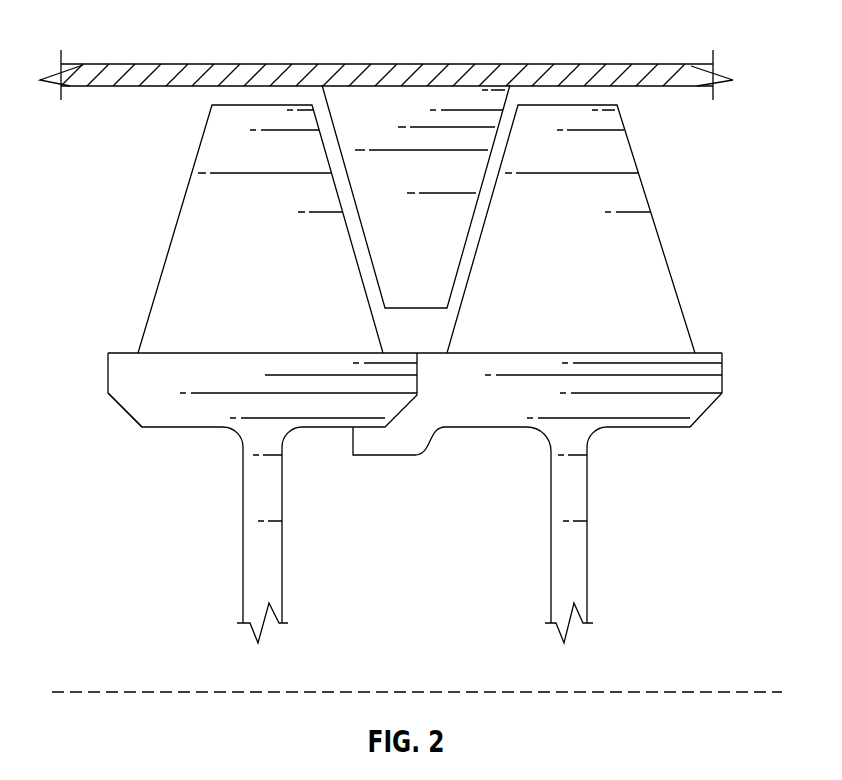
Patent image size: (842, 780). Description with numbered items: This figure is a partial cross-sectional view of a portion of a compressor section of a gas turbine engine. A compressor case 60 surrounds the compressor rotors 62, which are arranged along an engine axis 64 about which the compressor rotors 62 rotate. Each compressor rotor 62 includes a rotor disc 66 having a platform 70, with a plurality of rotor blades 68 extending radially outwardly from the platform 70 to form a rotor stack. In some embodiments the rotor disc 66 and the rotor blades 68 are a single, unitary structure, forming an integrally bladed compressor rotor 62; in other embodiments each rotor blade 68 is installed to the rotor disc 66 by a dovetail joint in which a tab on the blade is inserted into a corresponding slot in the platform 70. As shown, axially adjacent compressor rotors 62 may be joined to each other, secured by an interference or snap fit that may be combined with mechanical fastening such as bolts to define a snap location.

The compressor case 60 is at (643, 80).
The compressor rotor 62 is at (108, 372).
The engine axis 64 is at (75, 688).
The rotor disc 66 is at (243, 537).
The rotor blades 68 is at (189, 260).
The platform 70 is at (133, 398).